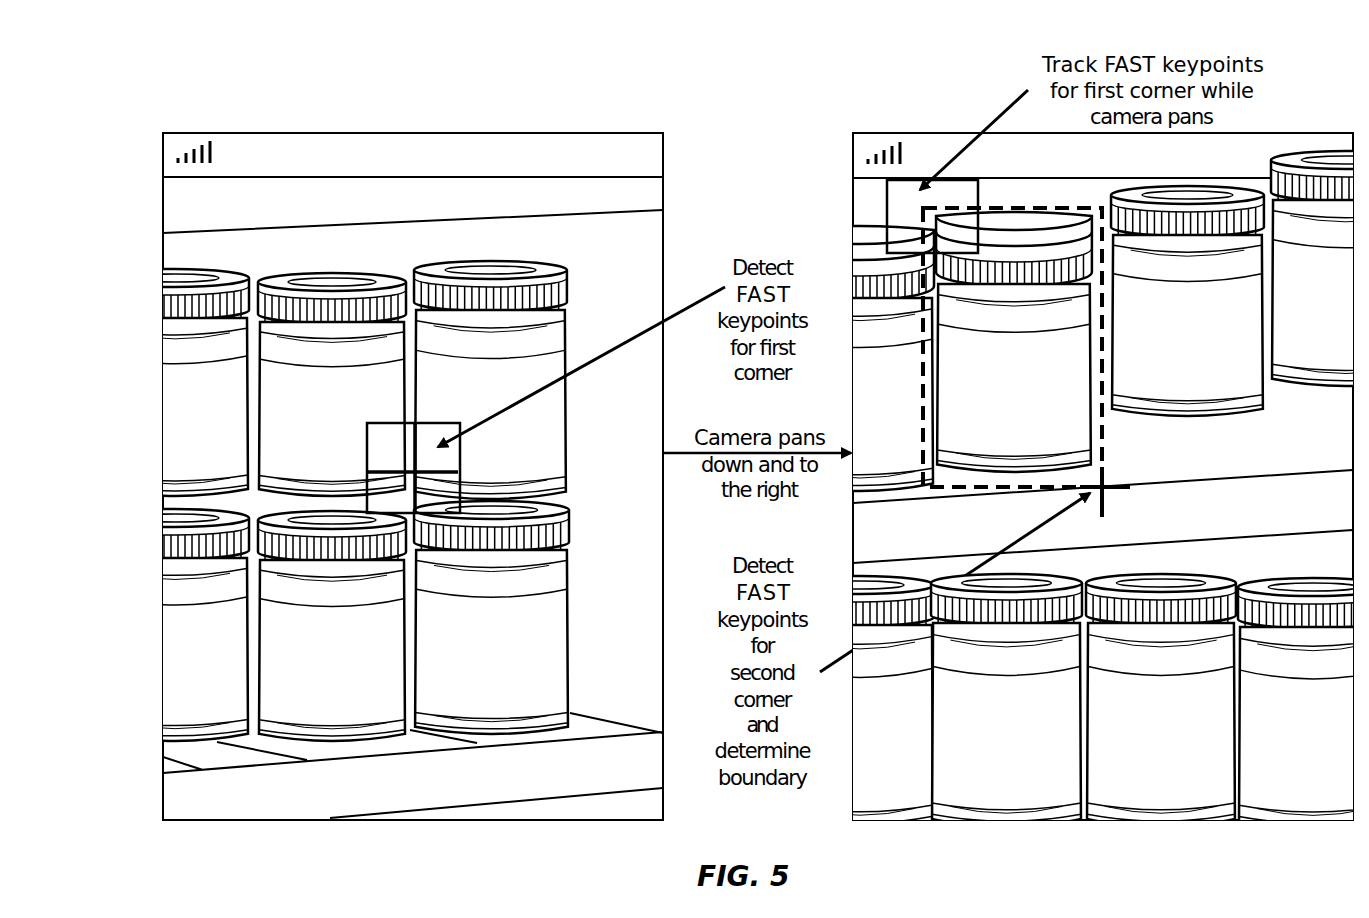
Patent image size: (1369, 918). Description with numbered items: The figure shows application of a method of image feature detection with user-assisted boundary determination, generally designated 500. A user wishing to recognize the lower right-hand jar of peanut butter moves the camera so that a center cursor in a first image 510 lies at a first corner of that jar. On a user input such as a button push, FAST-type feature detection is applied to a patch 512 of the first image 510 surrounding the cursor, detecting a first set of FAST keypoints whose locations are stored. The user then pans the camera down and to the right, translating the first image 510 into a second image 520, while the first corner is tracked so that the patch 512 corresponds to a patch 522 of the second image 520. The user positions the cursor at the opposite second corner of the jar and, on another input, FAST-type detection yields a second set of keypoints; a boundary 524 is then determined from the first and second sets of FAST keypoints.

The application of a method of image feature detection 500 is at (168, 108).
The first image 510 is at (395, 131).
The patch 512 is at (395, 423).
The second image 520 is at (908, 133).
The patch 522 is at (887, 217).
The boundary 524 is at (1115, 460).